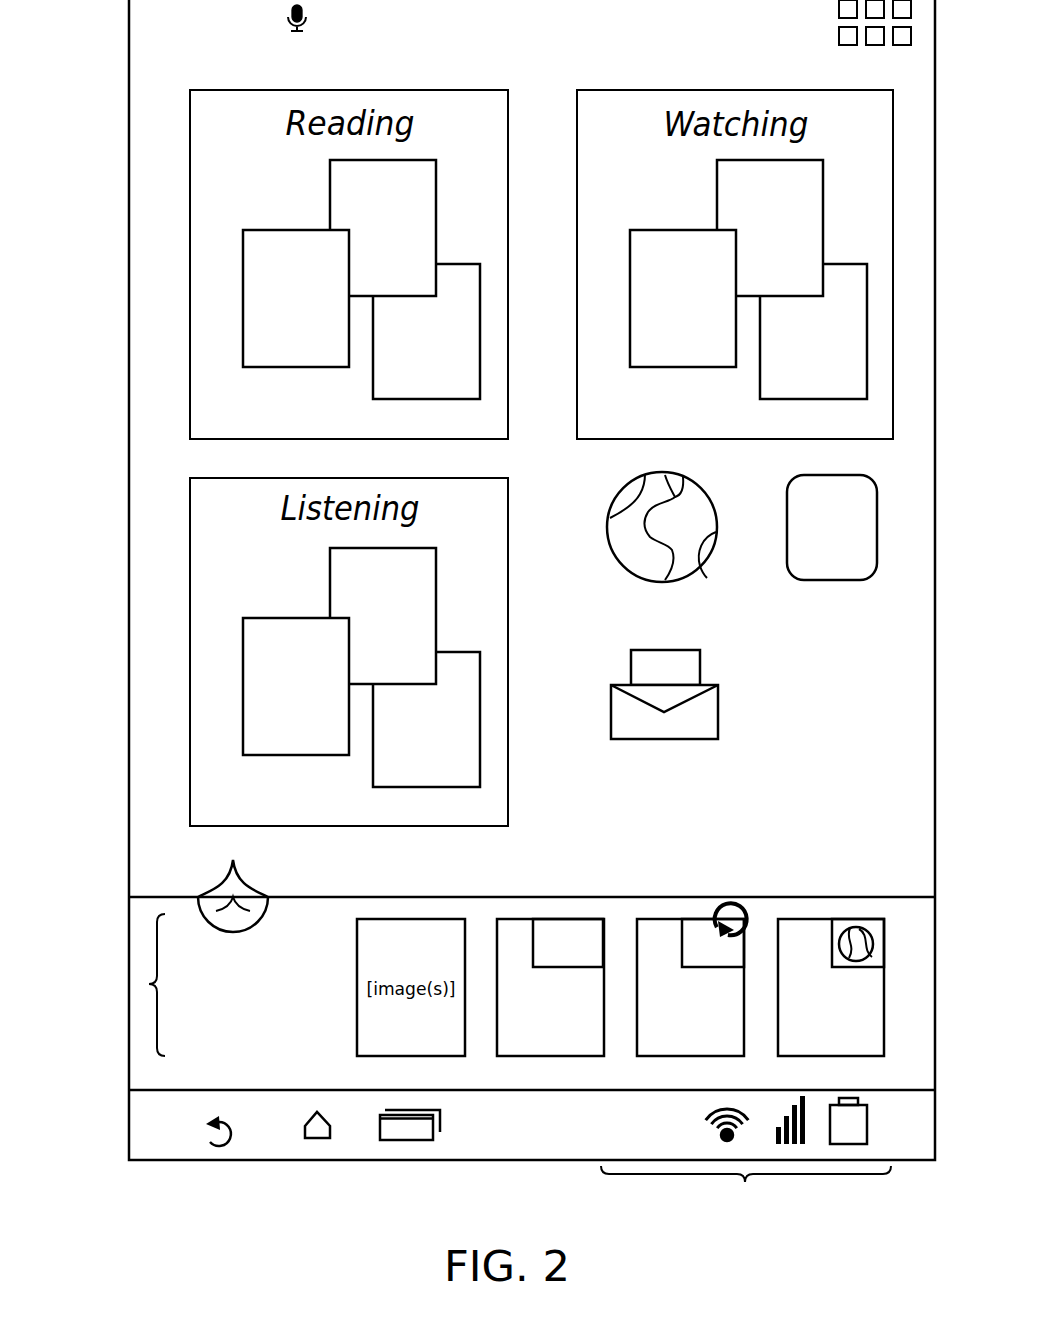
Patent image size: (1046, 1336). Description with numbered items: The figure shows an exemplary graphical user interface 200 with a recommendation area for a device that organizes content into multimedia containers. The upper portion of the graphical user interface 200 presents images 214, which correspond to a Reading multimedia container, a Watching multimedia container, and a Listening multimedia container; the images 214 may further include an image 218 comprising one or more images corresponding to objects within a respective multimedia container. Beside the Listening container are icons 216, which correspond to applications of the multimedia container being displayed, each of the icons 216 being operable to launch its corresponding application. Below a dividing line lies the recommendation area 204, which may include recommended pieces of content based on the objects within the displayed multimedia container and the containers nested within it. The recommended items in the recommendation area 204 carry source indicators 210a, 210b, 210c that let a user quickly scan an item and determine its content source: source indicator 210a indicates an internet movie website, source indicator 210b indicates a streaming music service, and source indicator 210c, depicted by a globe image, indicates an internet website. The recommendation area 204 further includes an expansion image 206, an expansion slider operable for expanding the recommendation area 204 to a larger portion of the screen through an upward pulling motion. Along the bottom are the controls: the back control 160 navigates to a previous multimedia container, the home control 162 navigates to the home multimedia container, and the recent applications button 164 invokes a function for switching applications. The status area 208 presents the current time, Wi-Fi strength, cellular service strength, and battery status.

The graphical user interface 200 is at (81, 46).
The images 214 is at (307, 214).
The image 218 is at (262, 650).
The icons 216 is at (705, 573).
The expansion image 206 is at (230, 883).
The recommendation area 204 is at (143, 984).
The source indicator 210a is at (597, 928).
The source indicator 210b is at (736, 928).
The source indicator 210c is at (870, 928).
The back control 160 is at (217, 1154).
The home control 162 is at (317, 1140).
The recent applications button 164 is at (407, 1140).
The status area 208 is at (741, 1185).